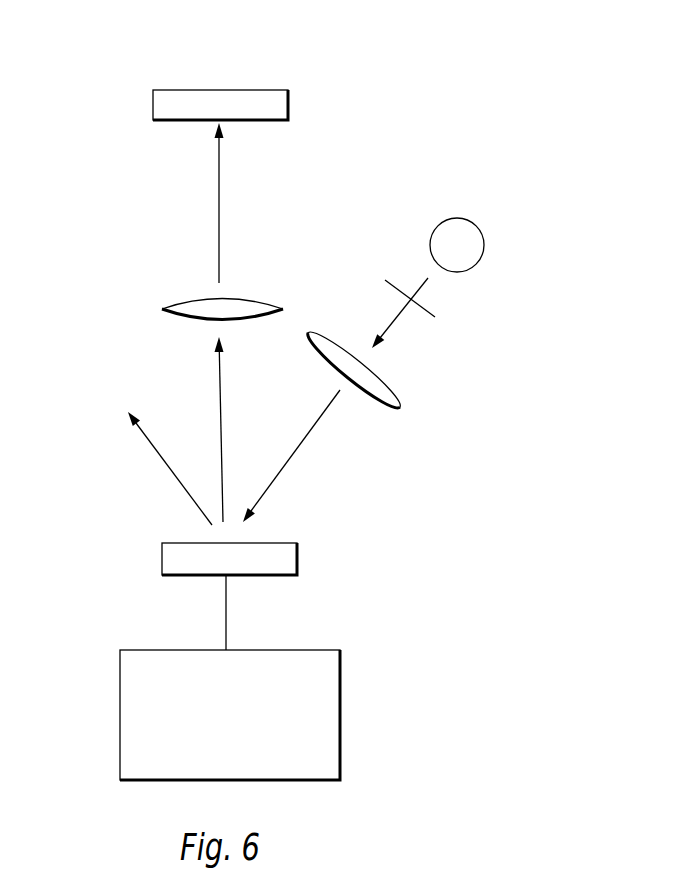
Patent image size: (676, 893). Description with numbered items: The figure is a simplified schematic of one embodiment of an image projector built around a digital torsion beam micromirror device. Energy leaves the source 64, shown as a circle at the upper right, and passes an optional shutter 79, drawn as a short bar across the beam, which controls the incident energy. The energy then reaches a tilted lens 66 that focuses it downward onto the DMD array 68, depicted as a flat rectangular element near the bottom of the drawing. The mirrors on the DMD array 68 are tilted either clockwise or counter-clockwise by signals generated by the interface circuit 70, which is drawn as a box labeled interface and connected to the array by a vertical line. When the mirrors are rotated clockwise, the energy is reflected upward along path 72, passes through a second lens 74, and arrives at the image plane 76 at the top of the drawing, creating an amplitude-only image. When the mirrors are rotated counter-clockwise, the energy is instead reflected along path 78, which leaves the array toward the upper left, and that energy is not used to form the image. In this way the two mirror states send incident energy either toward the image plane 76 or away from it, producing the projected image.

The source 64 is at (470, 227).
The lens 66 is at (390, 388).
The DMD array 68 is at (183, 560).
The interface circuit 70 is at (327, 665).
The path 72 is at (217, 470).
The lens 74 is at (208, 302).
The image plane 76 is at (245, 96).
The path 78 is at (167, 475).
The shutter 79 is at (427, 305).